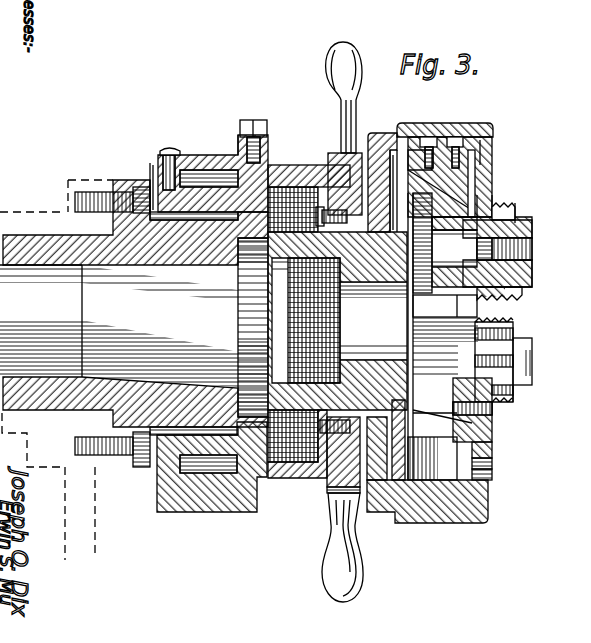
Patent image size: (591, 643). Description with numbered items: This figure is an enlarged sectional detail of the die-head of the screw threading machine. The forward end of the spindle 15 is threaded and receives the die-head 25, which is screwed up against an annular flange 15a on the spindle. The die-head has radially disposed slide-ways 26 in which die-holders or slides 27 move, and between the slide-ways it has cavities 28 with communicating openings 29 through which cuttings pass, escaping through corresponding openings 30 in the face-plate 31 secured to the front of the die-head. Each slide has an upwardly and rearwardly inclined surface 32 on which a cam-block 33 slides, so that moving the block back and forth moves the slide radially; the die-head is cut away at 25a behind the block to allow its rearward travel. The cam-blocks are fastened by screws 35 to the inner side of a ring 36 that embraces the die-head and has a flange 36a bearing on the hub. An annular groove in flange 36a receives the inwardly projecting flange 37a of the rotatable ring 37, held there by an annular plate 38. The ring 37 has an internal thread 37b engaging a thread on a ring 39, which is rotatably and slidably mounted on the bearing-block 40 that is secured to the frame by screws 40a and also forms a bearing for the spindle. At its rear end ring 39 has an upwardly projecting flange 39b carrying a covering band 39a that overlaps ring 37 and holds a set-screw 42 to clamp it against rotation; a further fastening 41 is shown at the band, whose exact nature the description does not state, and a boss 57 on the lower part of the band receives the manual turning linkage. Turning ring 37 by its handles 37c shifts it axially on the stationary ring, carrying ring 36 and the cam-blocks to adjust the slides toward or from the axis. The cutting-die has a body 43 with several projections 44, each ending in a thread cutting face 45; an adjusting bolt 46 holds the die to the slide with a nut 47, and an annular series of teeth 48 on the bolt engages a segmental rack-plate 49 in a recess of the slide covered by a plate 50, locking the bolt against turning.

The spindle 15 is at (119, 326).
The annular flange 15a is at (238, 308).
The die-head 25 is at (492, 426).
The cut-away portion of die-head 25a is at (388, 128).
The slide-ways 26 is at (488, 161).
The die-holders or slides 27 is at (494, 215).
The cavities 28 is at (484, 462).
The communicating openings 29 is at (484, 450).
The openings in face-plate 30 is at (488, 473).
The face-plate 31 is at (493, 136).
The inclined surface 32 is at (492, 188).
The cam-block 33 is at (490, 172).
The screws 35 is at (455, 135).
The ring 36 is at (421, 135).
The flange of ring 36a is at (373, 142).
The rotatable ring 37 is at (290, 170).
The inwardly projecting flange 37a is at (335, 155).
The internal thread 37b is at (290, 462).
The handles 37c is at (335, 58).
The annular plate 38 is at (310, 480).
The ring 39 is at (208, 195).
The covering band 39a is at (198, 160).
The upwardly projecting flange 39b is at (160, 172).
The bearing-block 40 is at (52, 213).
The screws 40a is at (97, 186).
The screw 41 is at (168, 147).
The set-screw 42 is at (264, 125).
The body of the die 43 is at (527, 235).
The projections 44 is at (517, 212).
The thread cutting face 45 is at (514, 297).
The adjusting bolt 46 is at (533, 250).
The nut 47 is at (527, 270).
The annular series of teeth 48 is at (436, 246).
The segmental rack-plate 49 is at (400, 240).
The plate 50 is at (445, 359).
The enlargement or boss 57 is at (212, 505).